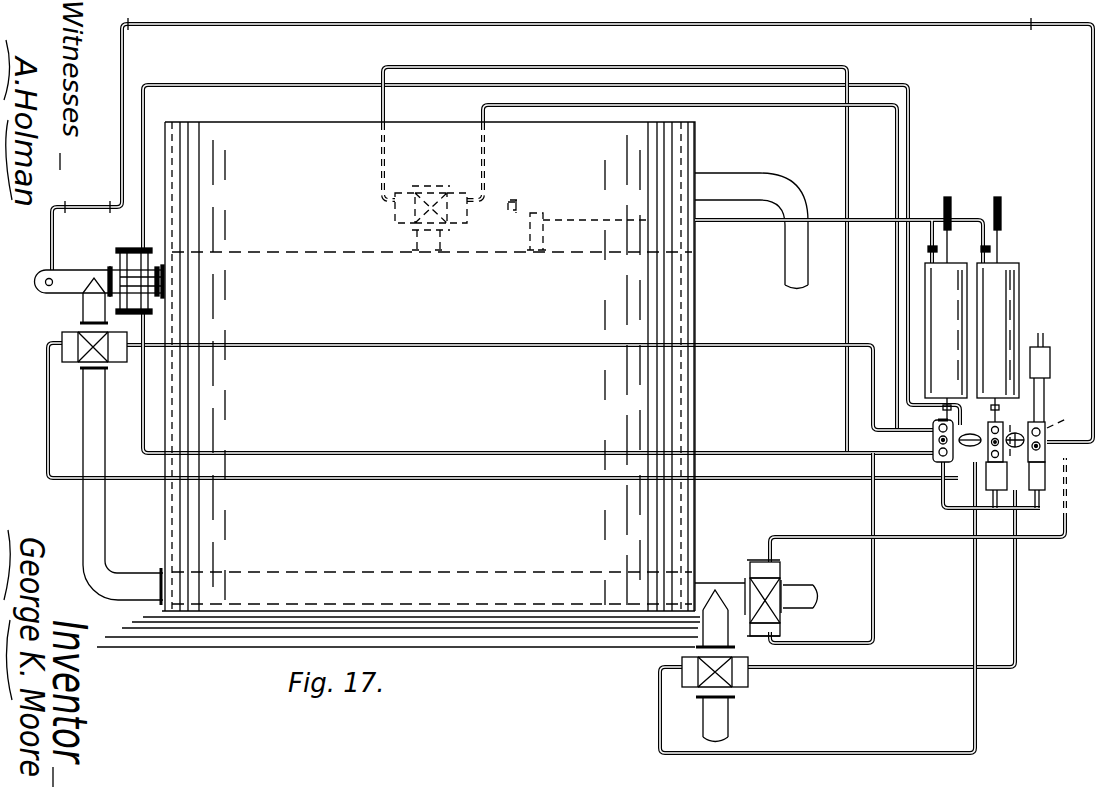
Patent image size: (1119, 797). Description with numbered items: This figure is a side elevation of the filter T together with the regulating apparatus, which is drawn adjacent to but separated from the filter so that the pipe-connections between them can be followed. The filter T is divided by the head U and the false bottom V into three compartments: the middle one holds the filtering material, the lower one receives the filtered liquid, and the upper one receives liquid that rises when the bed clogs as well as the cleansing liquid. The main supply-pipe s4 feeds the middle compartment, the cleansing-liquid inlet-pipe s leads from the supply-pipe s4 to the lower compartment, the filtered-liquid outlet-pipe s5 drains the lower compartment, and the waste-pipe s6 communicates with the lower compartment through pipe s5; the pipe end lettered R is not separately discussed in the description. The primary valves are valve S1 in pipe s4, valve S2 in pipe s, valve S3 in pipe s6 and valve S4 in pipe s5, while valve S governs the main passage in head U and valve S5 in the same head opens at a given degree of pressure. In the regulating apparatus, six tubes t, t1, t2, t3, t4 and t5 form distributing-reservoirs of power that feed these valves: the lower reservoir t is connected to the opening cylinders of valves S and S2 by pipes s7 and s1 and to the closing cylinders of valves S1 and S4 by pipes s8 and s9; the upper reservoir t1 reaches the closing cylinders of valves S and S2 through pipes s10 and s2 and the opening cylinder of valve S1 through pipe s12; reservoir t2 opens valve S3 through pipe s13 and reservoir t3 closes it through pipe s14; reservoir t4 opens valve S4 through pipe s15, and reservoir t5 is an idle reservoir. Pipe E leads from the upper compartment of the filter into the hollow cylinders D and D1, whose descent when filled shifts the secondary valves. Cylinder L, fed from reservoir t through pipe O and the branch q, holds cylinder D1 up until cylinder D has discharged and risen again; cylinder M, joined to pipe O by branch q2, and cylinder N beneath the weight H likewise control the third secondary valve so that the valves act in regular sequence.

The filter T is at (398, 384).
The head U is at (432, 266).
The false bottom V is at (432, 561).
The valve S is at (433, 186).
The valve S1 is at (136, 273).
The valve S2 is at (84, 323).
The valve S3 is at (728, 673).
The valve S4 is at (738, 593).
The valve S5 is at (578, 213).
The cleansing-liquid inlet-pipe s is at (123, 486).
The pipe s1 is at (493, 410).
The pipe s2 is at (530, 387).
The main supply-pipe s4 is at (557, 230).
The filtered-liquid outlet-pipe s5 is at (808, 598).
The waste-pipe s6 is at (705, 728).
The pipe s7 is at (615, 260).
The pipe s8 is at (538, 382).
The pipe s9 is at (821, 548).
The pipe s10 is at (690, 267).
The pipe s12 is at (551, 255).
The pipe s13 is at (819, 607).
The pipe s14 is at (896, 578).
The pipe s15 is at (917, 510).
The pipe R is at (73, 281).
The pipe E is at (751, 231).
The hollow cylinder D is at (839, 308).
The hollow cylinder D1 is at (998, 309).
The weight H is at (1049, 355).
The cylinder N is at (1045, 400).
The cylinder M is at (1044, 476).
The cylinder L is at (997, 482).
The pipe O is at (991, 493).
The pipe q is at (989, 498).
The pipe q2 is at (1040, 500).
The distributing-reservoir t is at (932, 440).
The distributing-reservoir t1 is at (935, 424).
The distributing-reservoir t2 is at (1018, 434).
The distributing-reservoir t3 is at (988, 424).
The distributing-reservoir t4 is at (1047, 446).
The distributing-reservoir t5 is at (922, 351).